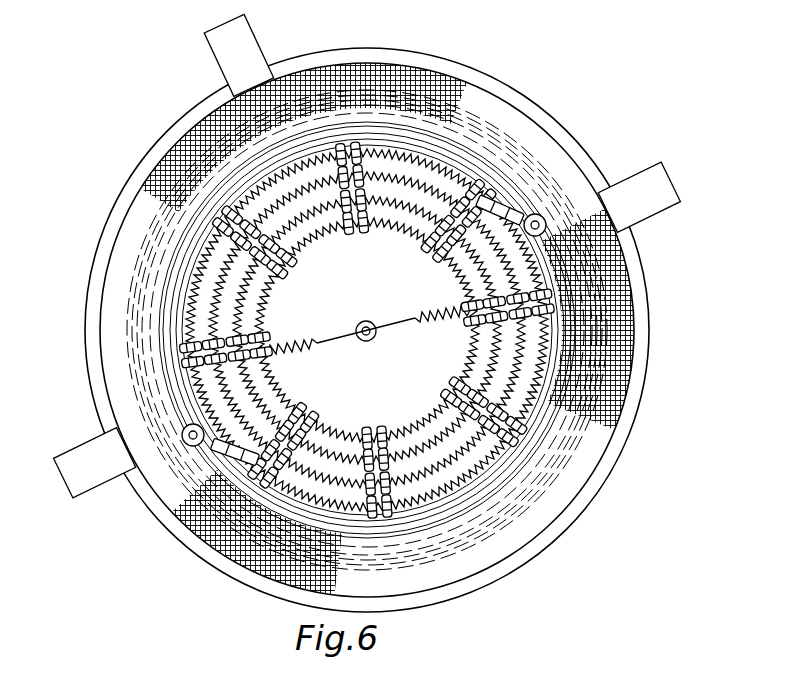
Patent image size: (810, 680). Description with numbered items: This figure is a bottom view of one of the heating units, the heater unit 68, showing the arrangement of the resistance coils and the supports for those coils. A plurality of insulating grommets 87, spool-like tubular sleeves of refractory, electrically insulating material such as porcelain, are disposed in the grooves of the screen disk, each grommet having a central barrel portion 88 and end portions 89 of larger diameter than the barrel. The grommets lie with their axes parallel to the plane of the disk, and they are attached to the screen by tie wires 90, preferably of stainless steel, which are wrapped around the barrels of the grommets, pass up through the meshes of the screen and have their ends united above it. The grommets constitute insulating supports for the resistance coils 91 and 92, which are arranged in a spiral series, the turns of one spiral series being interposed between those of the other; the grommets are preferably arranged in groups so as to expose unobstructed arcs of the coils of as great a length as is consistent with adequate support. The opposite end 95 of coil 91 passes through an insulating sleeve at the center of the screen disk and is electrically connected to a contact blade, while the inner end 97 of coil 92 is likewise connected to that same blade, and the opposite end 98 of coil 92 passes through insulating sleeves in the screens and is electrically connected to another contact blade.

The heater unit 68 is at (593, 131).
The insulating grommets 87 is at (351, 419).
The central barrel portion 88 is at (437, 405).
The end portions 89 is at (442, 402).
The tie wires 90 is at (237, 235).
The resistance coil 91 is at (370, 510).
The resistance coil 92 is at (332, 483).
The opposite end of coil 91 95 is at (329, 340).
The inner end of coil 92 97 is at (384, 326).
The opposite end of coil 92 98 is at (536, 213).